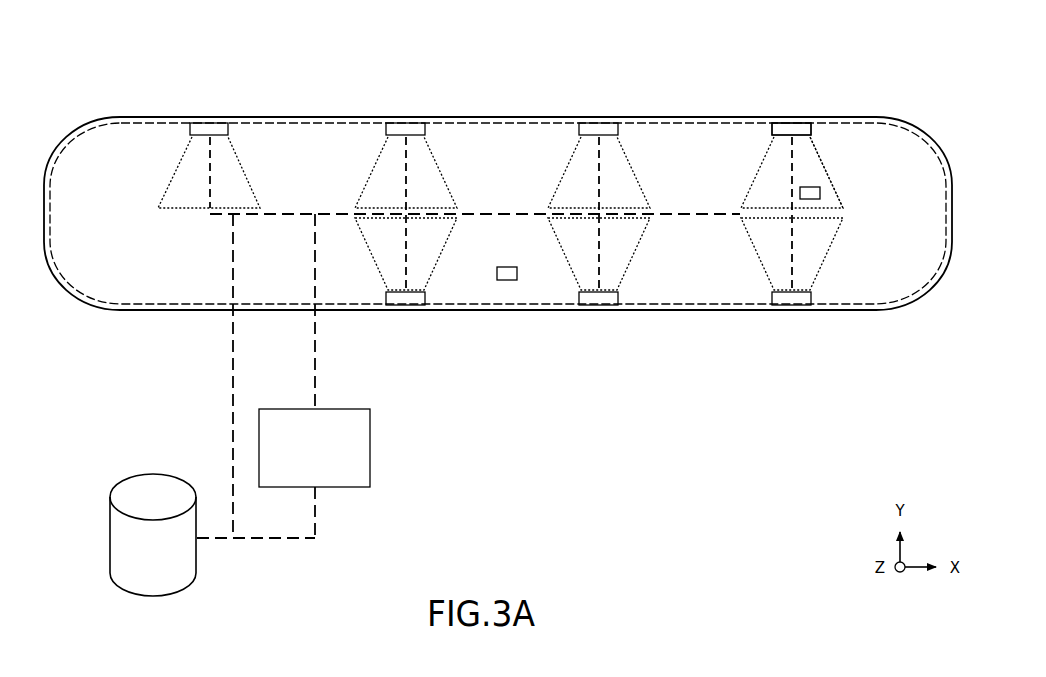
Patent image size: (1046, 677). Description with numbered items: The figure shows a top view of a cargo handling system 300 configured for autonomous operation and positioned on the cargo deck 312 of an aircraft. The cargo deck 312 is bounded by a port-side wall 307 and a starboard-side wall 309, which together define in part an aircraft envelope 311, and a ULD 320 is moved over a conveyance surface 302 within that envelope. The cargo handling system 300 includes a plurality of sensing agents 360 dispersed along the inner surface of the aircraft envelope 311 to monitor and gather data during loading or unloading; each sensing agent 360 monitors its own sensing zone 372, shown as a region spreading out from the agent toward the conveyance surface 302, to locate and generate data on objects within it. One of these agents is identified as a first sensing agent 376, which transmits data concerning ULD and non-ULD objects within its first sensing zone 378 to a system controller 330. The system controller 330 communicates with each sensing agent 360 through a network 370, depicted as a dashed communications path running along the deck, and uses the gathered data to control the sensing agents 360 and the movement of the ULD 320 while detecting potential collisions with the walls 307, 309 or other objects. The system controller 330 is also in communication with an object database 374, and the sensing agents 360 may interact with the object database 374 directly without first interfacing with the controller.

The cargo handling system 300 is at (310, 70).
The conveyance surface 302 is at (711, 163).
The port-side wall 307 is at (633, 310).
The starboard-side wall 309 is at (660, 118).
The aircraft envelope 311 is at (478, 118).
The cargo deck 312 is at (518, 170).
The ULD 320 is at (510, 280).
The system controller 330 is at (370, 434).
The sensing agents 360 is at (205, 118).
The network 370 is at (682, 215).
The sensing zone 372 is at (183, 158).
The object database 374 is at (112, 528).
The first sensing agent 376 is at (792, 118).
The first sensing zone 378 is at (822, 160).